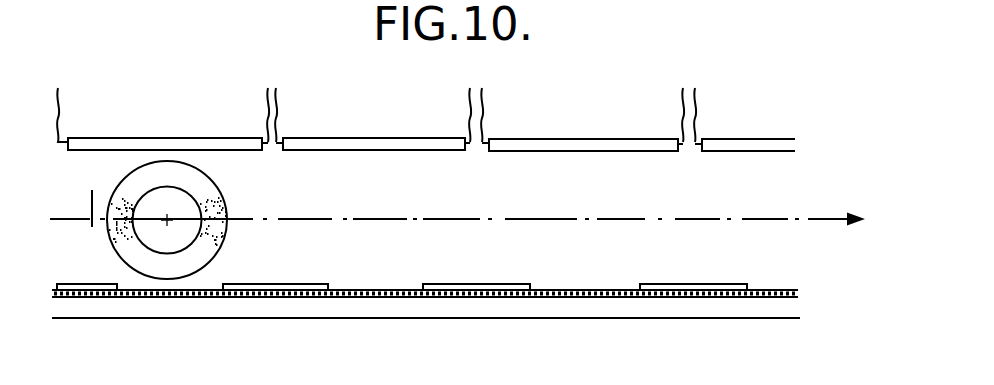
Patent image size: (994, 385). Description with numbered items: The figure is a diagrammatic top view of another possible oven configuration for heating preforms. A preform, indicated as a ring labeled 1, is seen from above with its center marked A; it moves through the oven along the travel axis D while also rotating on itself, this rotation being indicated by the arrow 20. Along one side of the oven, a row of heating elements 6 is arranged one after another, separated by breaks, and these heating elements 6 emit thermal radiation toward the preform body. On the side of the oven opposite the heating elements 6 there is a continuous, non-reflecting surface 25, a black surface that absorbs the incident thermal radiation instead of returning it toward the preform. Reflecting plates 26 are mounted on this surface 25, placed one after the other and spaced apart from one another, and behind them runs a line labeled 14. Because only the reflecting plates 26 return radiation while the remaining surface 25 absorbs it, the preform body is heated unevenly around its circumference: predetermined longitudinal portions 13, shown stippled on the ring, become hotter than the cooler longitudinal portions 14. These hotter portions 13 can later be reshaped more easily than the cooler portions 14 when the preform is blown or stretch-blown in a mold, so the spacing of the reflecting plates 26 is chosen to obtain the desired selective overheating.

The photosensitive drum 1 is at (223, 188).
The heating elements 6 is at (153, 142).
The hotter longitudinal portions 13 is at (112, 227).
The cooler longitudinal portions 14 is at (157, 267).
The arrow 20 is at (98, 195).
The continuous, non-reflecting surface 25 is at (372, 289).
The reflecting plates 26 is at (85, 291).
The drum axis A is at (167, 220).
The axis D is at (808, 218).